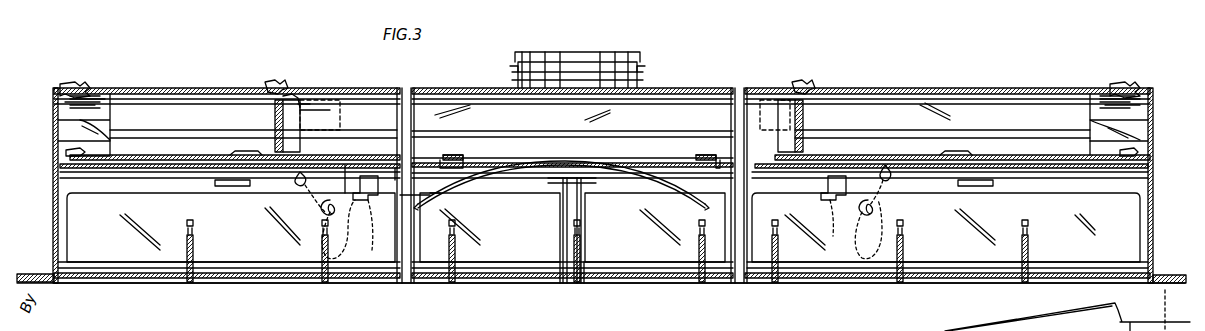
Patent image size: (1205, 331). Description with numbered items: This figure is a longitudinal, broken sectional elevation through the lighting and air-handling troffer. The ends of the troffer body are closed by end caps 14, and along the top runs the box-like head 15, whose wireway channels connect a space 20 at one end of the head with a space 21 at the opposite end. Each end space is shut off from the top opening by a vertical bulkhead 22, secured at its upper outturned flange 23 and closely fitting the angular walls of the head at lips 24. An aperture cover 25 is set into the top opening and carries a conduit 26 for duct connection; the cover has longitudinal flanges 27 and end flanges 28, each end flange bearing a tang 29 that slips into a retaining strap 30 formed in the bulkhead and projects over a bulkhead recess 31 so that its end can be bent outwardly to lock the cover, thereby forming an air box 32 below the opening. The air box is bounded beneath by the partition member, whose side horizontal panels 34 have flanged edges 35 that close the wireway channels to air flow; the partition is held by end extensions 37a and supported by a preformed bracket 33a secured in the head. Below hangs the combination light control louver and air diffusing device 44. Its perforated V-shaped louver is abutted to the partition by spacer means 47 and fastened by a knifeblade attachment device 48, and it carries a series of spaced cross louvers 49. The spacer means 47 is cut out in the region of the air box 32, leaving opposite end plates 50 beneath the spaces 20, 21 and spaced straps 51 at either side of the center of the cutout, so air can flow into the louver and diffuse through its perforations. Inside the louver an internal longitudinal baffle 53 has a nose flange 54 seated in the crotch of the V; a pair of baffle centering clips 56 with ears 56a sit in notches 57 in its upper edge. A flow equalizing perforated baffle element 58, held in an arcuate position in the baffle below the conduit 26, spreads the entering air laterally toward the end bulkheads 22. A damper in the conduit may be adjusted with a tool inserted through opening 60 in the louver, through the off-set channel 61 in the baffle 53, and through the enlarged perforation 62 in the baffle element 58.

The end cap 14 is at (52, 105).
The box-like head 15 is at (245, 93).
The space 20 is at (192, 97).
The space 21 is at (940, 100).
The vertical bulkhead 22 is at (280, 150).
The upper outturned flange 23 is at (272, 90).
The lips 24 is at (318, 128).
The aperture cover 25 is at (448, 92).
The conduit 26 is at (640, 62).
The longitudinal flange 27 is at (650, 100).
The end flange 28 is at (290, 100).
The tang 29 is at (305, 110).
The retaining strap 30 is at (298, 108).
The bulkhead recess 31 is at (275, 118).
The air box 32 is at (520, 127).
The bracket 33a is at (110, 120).
The side horizontal panel 34 is at (160, 141).
The flanged edge 35 is at (127, 131).
The end extension 37a is at (75, 148).
The combination light control louver and air diffusing device 44 is at (794, 294).
The spacer means 47 is at (88, 193).
The knifeblade attachment device 48 is at (233, 178).
The cross louver 49 is at (195, 248).
The end plate 50 is at (160, 178).
The spaced strap 51 is at (462, 168).
The internal longitudinal baffle 53 is at (505, 255).
The nose flange 54 is at (1092, 262).
The baffle centering clip 56 is at (370, 180).
The ear 56a is at (368, 220).
The notch 57 is at (400, 197).
The flow equalizing perforated baffle element 58 is at (600, 178).
The opening 60 is at (572, 282).
The off-set channel 61 is at (583, 208).
The enlarged perforation 62 is at (580, 173).